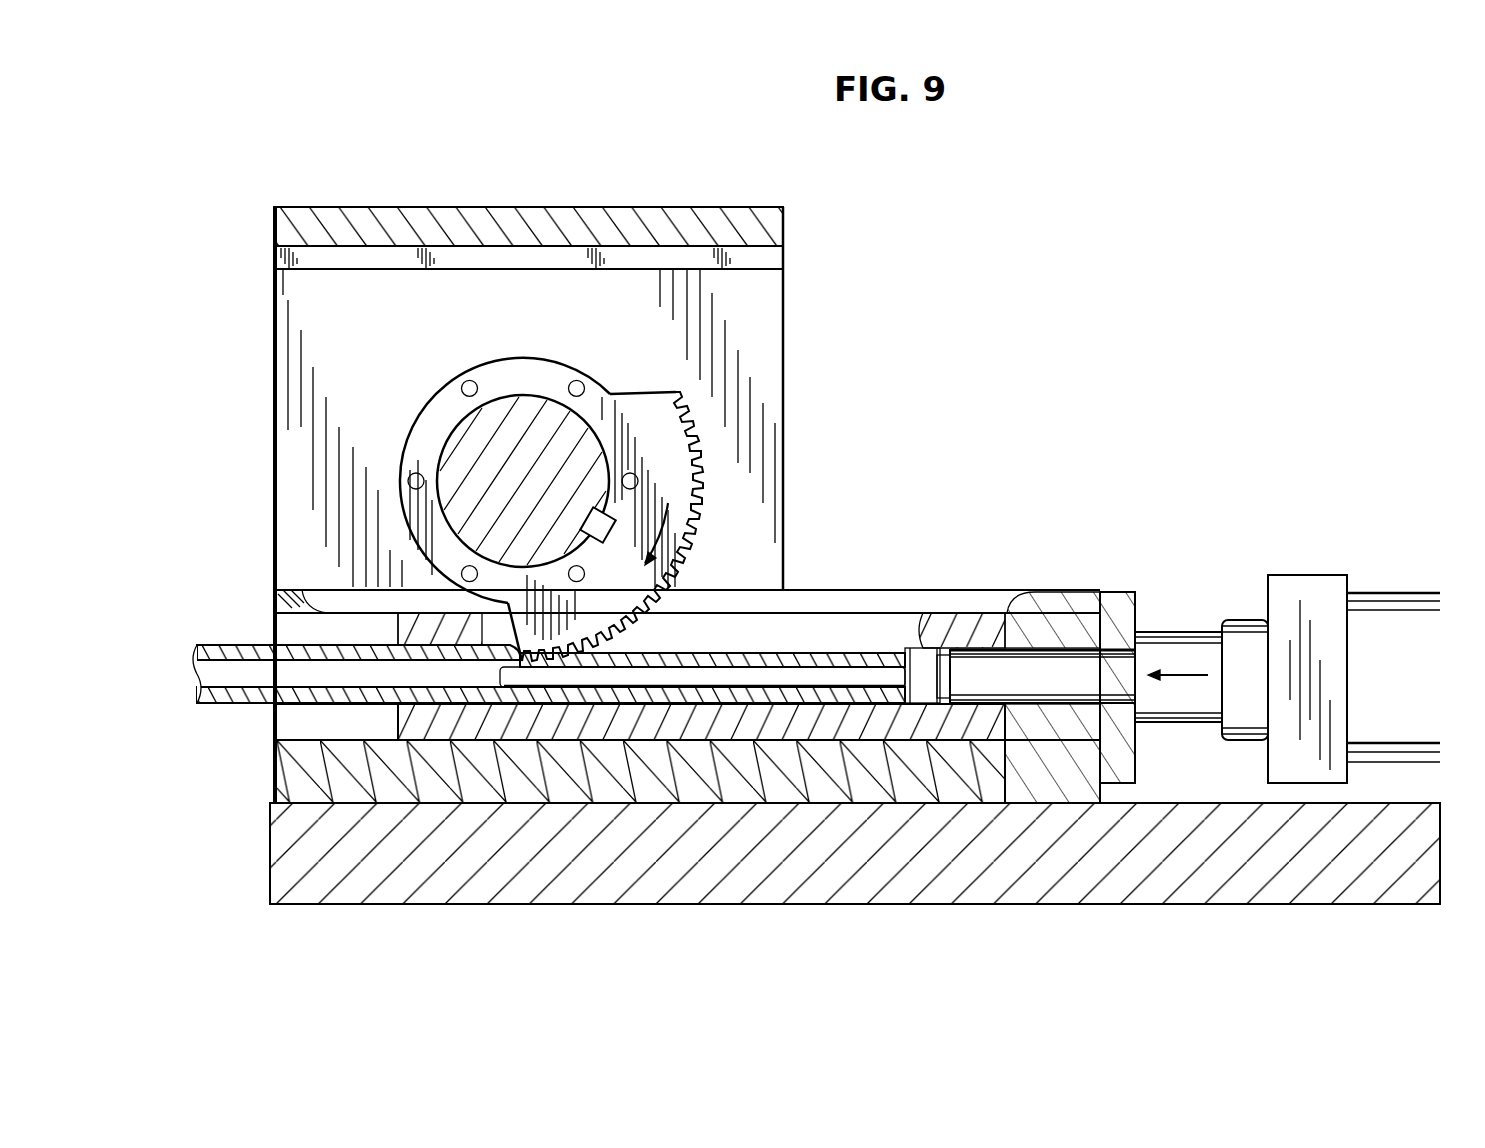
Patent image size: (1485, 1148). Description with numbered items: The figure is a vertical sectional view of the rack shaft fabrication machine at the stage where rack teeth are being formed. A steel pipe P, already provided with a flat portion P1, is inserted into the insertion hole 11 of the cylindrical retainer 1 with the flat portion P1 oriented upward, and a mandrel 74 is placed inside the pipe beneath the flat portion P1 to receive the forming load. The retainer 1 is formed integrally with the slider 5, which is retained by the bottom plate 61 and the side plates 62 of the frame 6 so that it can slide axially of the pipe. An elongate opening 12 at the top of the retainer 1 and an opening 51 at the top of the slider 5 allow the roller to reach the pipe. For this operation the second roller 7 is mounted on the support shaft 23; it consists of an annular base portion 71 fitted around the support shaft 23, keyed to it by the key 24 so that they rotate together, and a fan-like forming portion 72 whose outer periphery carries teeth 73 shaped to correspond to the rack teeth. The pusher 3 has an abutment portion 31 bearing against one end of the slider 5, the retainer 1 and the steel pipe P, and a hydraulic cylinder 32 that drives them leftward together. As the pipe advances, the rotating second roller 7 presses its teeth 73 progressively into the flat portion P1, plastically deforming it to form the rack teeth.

The retainer 1 is at (893, 720).
The pusher 3 is at (1302, 567).
The slider 5 is at (473, 783).
The frame 6 is at (657, 205).
The second roller 7 is at (532, 498).
The insertion hole 11 is at (413, 690).
The elongate opening 12 is at (873, 628).
The support shaft 23 is at (457, 335).
The key 24 is at (590, 523).
The abutment portion 31 is at (1090, 628).
The hydraulic cylinder 32 is at (1420, 615).
The opening 51 is at (967, 600).
The bottom plate 61 is at (1195, 880).
The side plates 62 is at (748, 327).
The annular base portion 71 is at (422, 443).
The forming portion 72 is at (675, 457).
The teeth 73 is at (693, 547).
The mandrel 74 is at (698, 675).
The steel pipe P is at (243, 706).
The flat portion P1 is at (822, 650).